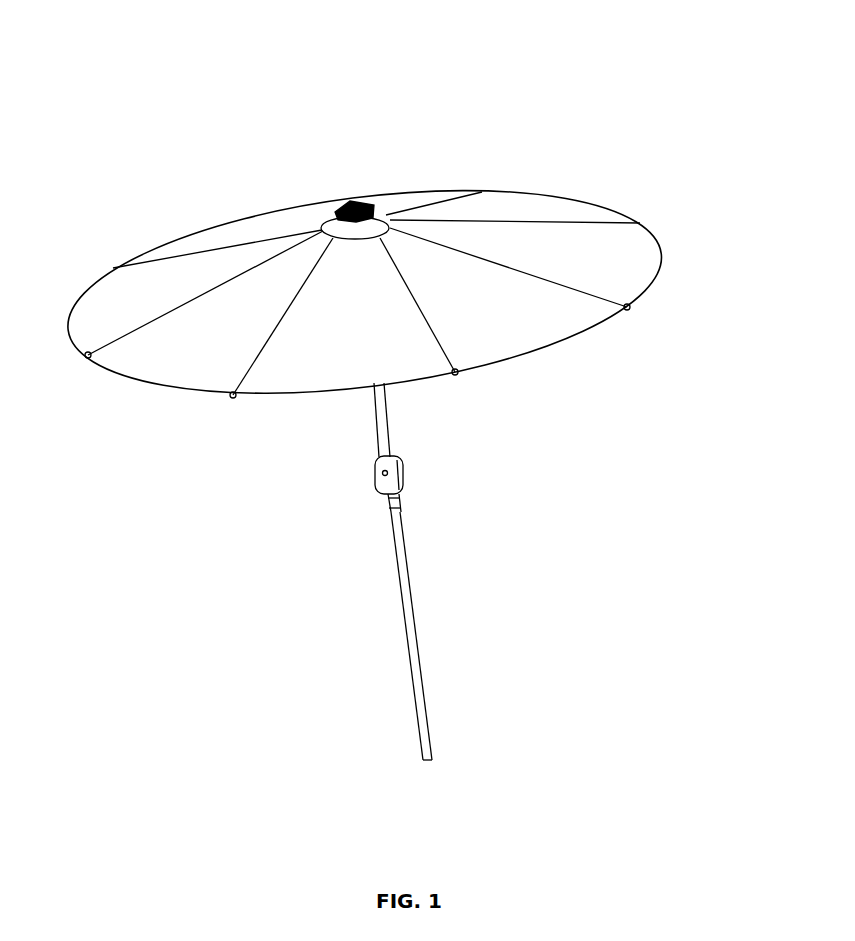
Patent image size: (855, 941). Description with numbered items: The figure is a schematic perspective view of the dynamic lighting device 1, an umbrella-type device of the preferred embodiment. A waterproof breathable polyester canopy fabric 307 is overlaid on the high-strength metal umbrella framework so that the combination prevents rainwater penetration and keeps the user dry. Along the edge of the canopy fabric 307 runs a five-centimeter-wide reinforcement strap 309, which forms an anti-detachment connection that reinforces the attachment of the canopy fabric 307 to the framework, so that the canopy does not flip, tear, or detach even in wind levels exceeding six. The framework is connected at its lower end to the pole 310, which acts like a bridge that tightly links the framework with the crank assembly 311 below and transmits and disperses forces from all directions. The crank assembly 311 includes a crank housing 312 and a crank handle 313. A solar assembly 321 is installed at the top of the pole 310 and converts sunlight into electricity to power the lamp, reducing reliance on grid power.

The dynamic lighting device 1 is at (681, 2).
The canopy fabric 307 is at (485, 295).
The reinforcement strap 309 is at (232, 395).
The solar assembly 321 is at (341, 204).
The pole 310 is at (393, 527).
The crank assembly 311 is at (727, 477).
The crank housing 312 is at (402, 462).
The crank handle 313 is at (404, 490).